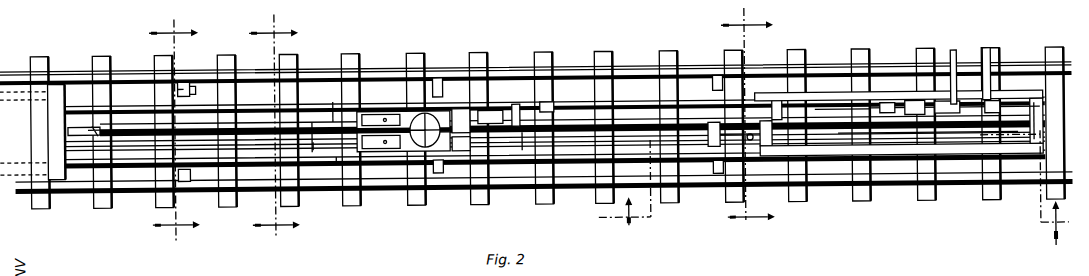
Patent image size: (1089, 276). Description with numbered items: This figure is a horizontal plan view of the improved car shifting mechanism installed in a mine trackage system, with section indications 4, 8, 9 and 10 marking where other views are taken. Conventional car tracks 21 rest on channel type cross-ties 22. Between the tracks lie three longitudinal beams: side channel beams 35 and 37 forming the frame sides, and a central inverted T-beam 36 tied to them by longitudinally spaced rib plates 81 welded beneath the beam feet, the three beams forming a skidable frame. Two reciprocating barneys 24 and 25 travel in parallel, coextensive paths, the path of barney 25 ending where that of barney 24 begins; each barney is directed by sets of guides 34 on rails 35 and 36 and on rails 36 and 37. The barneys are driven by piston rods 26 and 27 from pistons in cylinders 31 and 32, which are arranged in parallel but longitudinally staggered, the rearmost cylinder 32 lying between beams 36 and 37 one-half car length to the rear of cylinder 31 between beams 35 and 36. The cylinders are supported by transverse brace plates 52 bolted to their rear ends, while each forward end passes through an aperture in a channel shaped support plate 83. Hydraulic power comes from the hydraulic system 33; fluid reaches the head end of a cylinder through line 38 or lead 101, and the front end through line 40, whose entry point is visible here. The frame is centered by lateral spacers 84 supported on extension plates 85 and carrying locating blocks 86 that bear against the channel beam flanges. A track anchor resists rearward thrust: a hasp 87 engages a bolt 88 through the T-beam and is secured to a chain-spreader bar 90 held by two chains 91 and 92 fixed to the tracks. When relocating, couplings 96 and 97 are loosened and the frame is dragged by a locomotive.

The section line 10- 10 is at (168, 128).
The section line 8- 8 is at (271, 130).
The section line 9- 9 is at (738, 124).
The section line 4- 4 is at (833, 193).
The tracks 21 is at (704, 69).
The cross-ties 22 is at (592, 58).
The barney 24 is at (375, 111).
The barney 25 is at (375, 151).
The piston rod 26 is at (468, 105).
The piston rod 27 is at (580, 130).
The cylinder 31 is at (625, 114).
The cylinder 32 is at (838, 136).
The hydraulic system 33 is at (912, 105).
The guides 34 is at (310, 121).
The rail 35 is at (333, 99).
The rail 36 is at (313, 148).
The rail 37 is at (336, 160).
The line 38 is at (1035, 102).
The line 40 is at (750, 140).
The brace plates 52 is at (776, 103).
The rib plates 81 is at (300, 146).
The support plate 83 is at (515, 107).
The lateral spacers 84 is at (184, 92).
The extension plates 85 is at (185, 80).
The locating blocks 86 is at (192, 86).
The hasp 87 is at (96, 123).
The bolt 88 is at (98, 123).
The chain-spreader bar 90 is at (58, 150).
The chain 91 is at (40, 95).
The chain 92 is at (40, 166).
The coupling 96 is at (954, 98).
The coupling 97 is at (990, 95).
The lead 101 is at (820, 111).